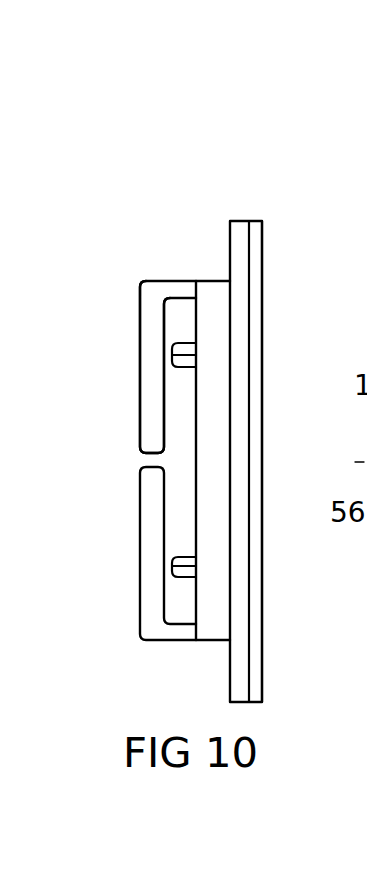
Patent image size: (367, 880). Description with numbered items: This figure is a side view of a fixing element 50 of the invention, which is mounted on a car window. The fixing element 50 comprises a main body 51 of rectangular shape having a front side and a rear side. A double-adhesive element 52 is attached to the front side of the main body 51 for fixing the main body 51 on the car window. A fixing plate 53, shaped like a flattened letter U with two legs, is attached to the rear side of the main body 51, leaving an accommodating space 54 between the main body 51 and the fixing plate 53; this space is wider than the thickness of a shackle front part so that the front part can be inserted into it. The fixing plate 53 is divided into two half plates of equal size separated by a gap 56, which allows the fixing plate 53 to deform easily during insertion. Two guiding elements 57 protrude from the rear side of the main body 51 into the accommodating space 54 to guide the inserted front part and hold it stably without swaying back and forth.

The clip assembly 50 is at (177, 243).
The main body 51 is at (238, 221).
The double-adhesive element 52 is at (258, 249).
The fixing plate 53 is at (150, 362).
The accommodating space 54 is at (189, 423).
The gap 56 is at (150, 459).
The guiding elements 57 is at (182, 570).